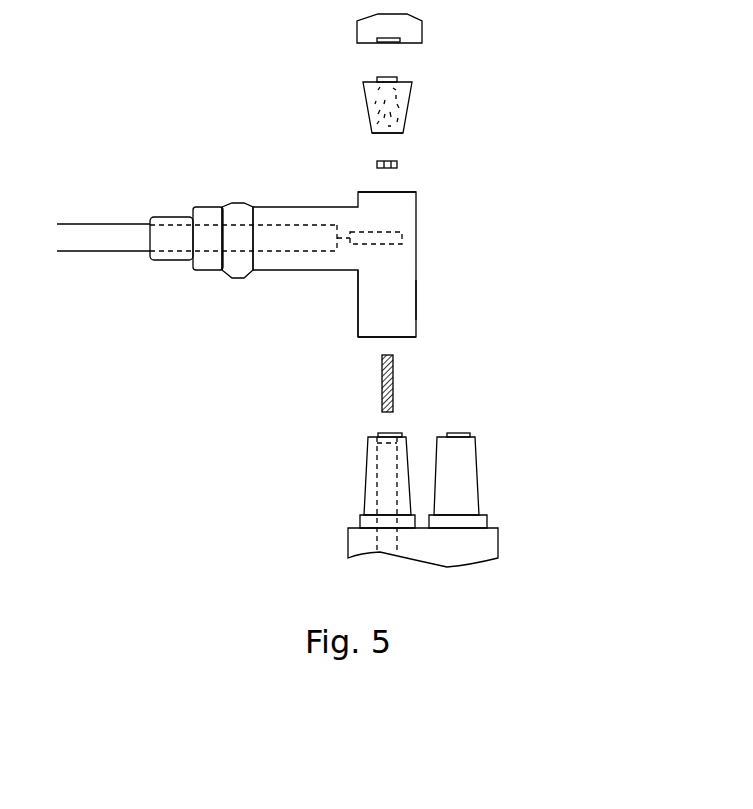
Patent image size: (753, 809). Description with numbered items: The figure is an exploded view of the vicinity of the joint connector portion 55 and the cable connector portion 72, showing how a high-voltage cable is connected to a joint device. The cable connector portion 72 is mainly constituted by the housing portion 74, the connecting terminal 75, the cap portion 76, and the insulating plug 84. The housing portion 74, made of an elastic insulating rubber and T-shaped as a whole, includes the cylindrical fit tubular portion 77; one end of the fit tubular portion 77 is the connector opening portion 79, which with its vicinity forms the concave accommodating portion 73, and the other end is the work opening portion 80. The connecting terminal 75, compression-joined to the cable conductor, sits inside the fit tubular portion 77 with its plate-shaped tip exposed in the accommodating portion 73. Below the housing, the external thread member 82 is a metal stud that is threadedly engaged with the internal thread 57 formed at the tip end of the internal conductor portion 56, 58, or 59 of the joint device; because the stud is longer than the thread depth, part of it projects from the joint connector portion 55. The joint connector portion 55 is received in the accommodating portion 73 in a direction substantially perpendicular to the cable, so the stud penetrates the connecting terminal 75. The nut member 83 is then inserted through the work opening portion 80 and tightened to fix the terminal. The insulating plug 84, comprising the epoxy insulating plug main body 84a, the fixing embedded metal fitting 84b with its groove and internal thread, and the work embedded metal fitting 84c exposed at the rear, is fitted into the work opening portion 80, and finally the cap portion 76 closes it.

The cap portion 76 is at (357, 28).
The insulating plug 84 is at (393, 97).
The insulating plug main body 84a is at (405, 103).
The fixing embedded metal fitting 84b is at (365, 129).
The work embedded metal fitting 84c is at (392, 77).
The nut member 83 is at (377, 165).
The work opening portion 80 is at (265, 260).
The cable connector portion 72 is at (418, 269).
The accommodating portion 73 is at (357, 323).
The housing portion 74 is at (416, 207).
The connecting terminal 75 is at (402, 238).
The fit tubular portion 77 is at (407, 298).
The connector opening portion 79 is at (407, 338).
The external thread member 82 is at (393, 385).
The joint connector portion 55 is at (370, 479).
The internal thread 57 is at (378, 444).
The internal conductor portion 56 is at (373, 500).
The internal conductor portion 58 is at (387, 521).
The internal conductor portion 59 is at (423, 547).